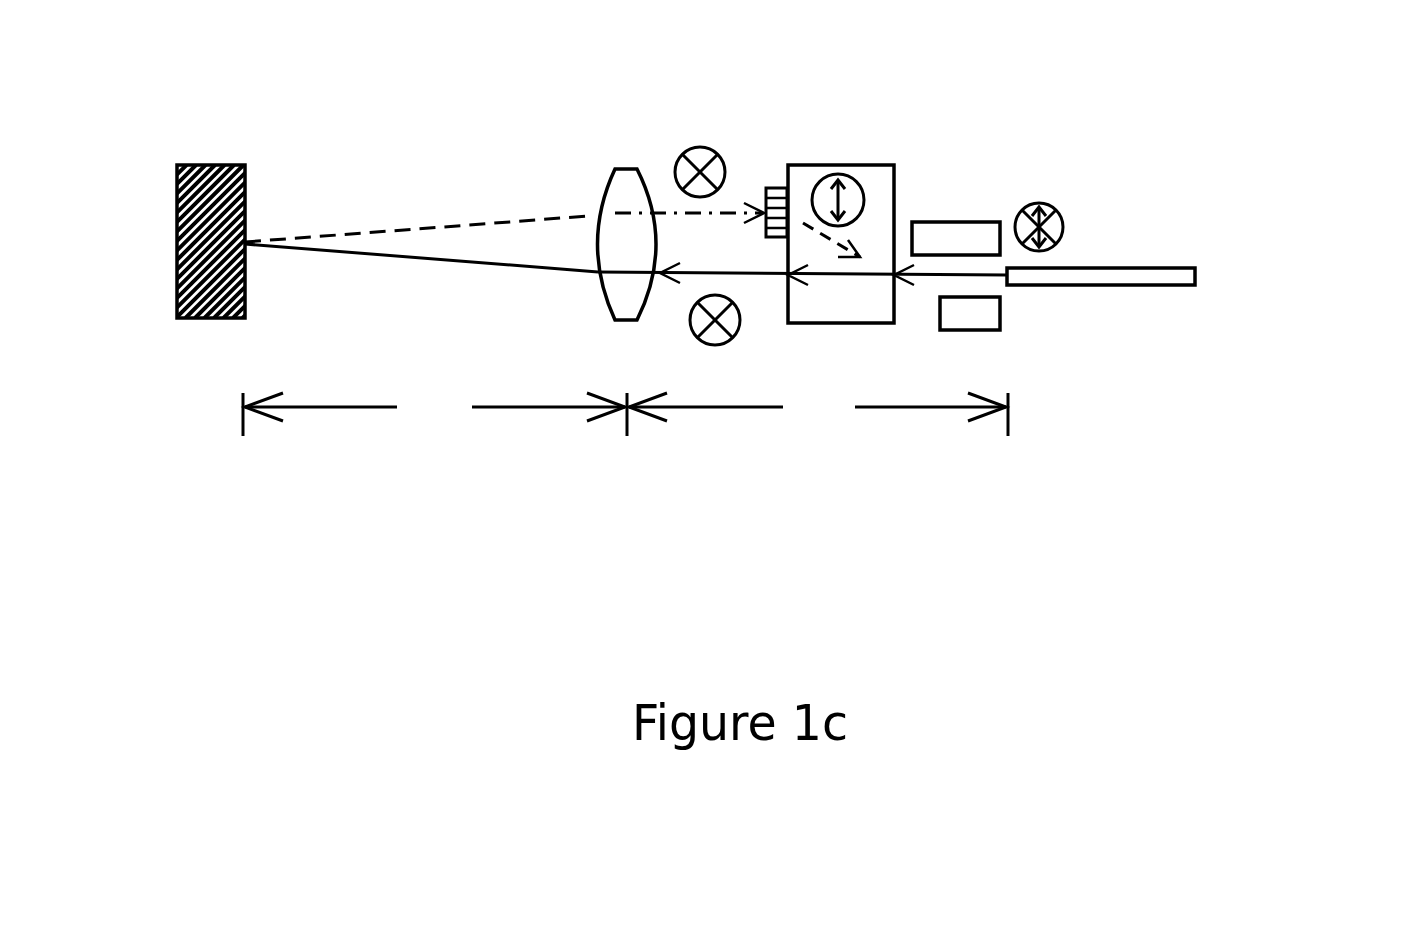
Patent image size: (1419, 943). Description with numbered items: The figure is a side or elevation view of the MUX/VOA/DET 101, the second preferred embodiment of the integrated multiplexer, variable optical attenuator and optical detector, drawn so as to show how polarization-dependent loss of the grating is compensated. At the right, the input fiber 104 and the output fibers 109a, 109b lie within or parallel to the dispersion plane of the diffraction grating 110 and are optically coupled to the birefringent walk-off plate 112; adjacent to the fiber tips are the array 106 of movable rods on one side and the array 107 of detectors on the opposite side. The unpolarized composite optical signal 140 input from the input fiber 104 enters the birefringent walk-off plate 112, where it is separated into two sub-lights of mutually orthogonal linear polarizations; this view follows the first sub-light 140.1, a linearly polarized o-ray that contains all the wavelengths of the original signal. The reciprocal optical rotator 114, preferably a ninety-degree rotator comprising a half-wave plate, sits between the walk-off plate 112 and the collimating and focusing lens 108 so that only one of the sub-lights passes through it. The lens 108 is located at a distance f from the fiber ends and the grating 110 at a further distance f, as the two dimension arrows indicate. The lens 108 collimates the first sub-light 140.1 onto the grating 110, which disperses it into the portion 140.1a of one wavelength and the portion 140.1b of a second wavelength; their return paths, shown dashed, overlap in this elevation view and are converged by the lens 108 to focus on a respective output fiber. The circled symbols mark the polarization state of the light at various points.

The MUX/VOA/DET 101 is at (347, 76).
The diffraction grating 110 is at (177, 208).
The portion of wavelength λ1 140.1a is at (590, 214).
The portion of wavelength λ2 140.1b is at (504, 201).
The collimating and focusing lens 108 is at (627, 168).
The composite optical signal 140 is at (914, 284).
The first sub-light 140.1 is at (398, 262).
The reciprocal optical rotator 114 is at (772, 188).
The birefringent walk-off plate 112 is at (887, 165).
The array of movable rods 106 is at (967, 222).
The array of detectors 107 is at (1000, 331).
The input fiber 104 is at (1180, 268).
The output fiber 109a is at (1206, 232).
The output fiber 109b is at (1206, 232).